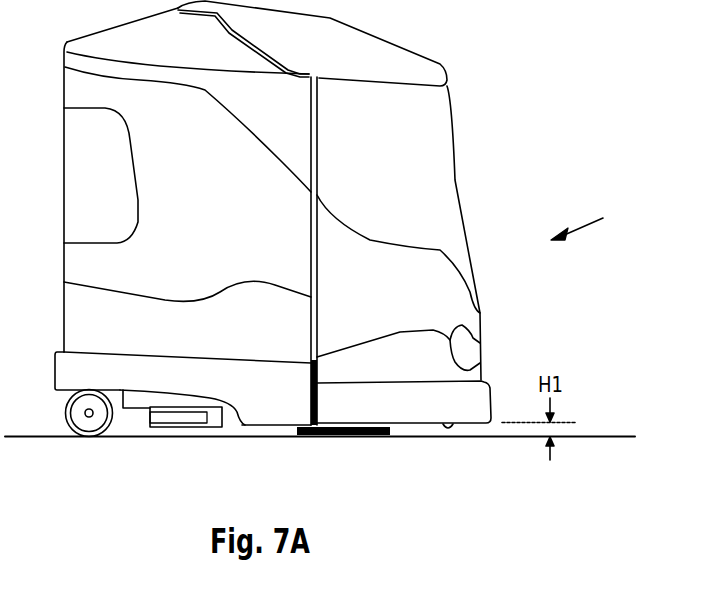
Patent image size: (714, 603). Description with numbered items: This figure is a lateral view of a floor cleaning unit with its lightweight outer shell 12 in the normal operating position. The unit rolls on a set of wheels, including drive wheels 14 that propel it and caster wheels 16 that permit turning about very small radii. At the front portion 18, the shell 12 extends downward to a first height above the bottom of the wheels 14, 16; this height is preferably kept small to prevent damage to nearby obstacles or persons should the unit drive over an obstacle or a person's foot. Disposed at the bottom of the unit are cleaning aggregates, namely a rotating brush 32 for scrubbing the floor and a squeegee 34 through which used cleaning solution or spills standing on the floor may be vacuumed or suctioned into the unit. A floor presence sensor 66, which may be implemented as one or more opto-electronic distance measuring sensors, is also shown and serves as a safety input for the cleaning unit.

The shell 12 is at (447, 188).
The drive wheels 14 is at (258, 432).
The caster wheels 16 is at (90, 437).
The front portion 18 is at (591, 220).
The rotating brush 32 is at (363, 437).
The squeegee 34 is at (157, 428).
The floor presence sensor 66 is at (448, 432).